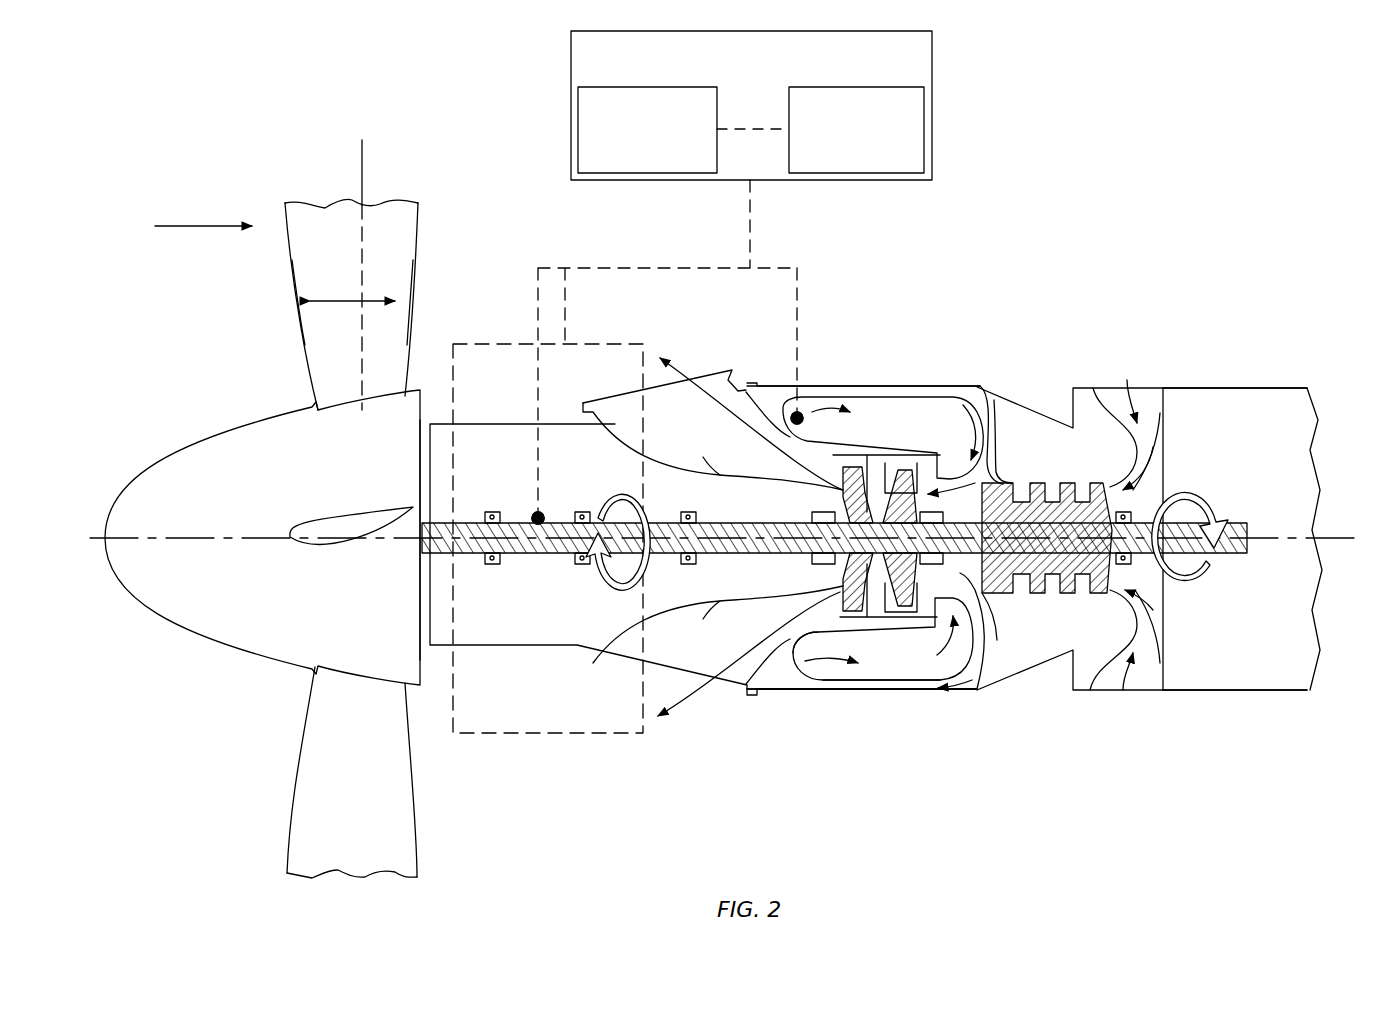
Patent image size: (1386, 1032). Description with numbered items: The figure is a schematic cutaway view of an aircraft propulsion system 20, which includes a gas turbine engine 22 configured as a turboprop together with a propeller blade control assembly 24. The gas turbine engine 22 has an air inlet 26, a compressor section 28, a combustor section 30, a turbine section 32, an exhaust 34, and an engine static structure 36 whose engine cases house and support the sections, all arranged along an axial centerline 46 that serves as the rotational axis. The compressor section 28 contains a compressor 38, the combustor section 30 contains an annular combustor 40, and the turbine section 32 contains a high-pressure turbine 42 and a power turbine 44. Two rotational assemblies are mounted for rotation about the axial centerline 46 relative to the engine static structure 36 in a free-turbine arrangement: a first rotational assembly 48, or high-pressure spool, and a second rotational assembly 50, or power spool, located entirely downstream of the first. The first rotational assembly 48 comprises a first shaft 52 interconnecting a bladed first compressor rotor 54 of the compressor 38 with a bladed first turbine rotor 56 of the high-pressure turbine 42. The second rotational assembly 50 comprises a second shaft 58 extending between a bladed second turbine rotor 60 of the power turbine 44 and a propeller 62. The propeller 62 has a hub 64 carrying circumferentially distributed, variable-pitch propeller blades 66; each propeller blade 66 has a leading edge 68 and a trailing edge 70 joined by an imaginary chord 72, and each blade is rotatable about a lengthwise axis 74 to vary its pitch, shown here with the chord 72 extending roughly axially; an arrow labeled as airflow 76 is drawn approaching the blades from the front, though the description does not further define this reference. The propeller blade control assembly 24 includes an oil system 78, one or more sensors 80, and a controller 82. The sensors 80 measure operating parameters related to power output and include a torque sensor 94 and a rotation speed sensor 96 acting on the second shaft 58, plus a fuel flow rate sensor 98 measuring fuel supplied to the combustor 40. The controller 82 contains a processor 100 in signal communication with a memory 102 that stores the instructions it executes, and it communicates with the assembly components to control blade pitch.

The propulsion system 20 is at (1245, 257).
The gas turbine engine 22 is at (1020, 362).
The propeller blade control assembly 24 is at (950, 122).
The air inlet 26 is at (1135, 395).
The compressor section 28 is at (1034, 603).
The combustor section 30 is at (886, 708).
The turbine section 32 is at (798, 610).
The exhaust 34 is at (718, 680).
The engine static structure 36 is at (930, 700).
The compressor 38 is at (1081, 600).
The annular combustor 40 is at (830, 663).
The high-pressure turbine 42 is at (988, 485).
The power turbine 44 is at (822, 574).
The axial centerline 46 is at (1352, 556).
The first rotational assembly 48 is at (1142, 568).
The second rotational assembly 50 is at (587, 585).
The first shaft 52 is at (982, 593).
The bladed first compressor rotor 54 is at (1080, 520).
The bladed first turbine rotor 56 is at (897, 478).
The second shaft 58 is at (522, 565).
The bladed second turbine rotor 60 is at (843, 487).
The propeller 62 is at (181, 645).
The hub 64 is at (275, 648).
The propeller blade 66 is at (332, 356).
The leading edge 68 is at (300, 297).
The trailing edge 70 is at (405, 297).
The chord 72 is at (346, 301).
The lengthwise axis 74 is at (370, 150).
The incoming airflow 76 is at (200, 226).
The oil system 78 is at (560, 735).
The sensors 80 is at (547, 511).
The controller 82 is at (834, 66).
The torque sensor 94 is at (533, 515).
The rotation speed sensor 96 is at (538, 518).
The fuel flow rate sensor 98 is at (792, 412).
The processor 100 is at (676, 159).
The memory 102 is at (880, 159).